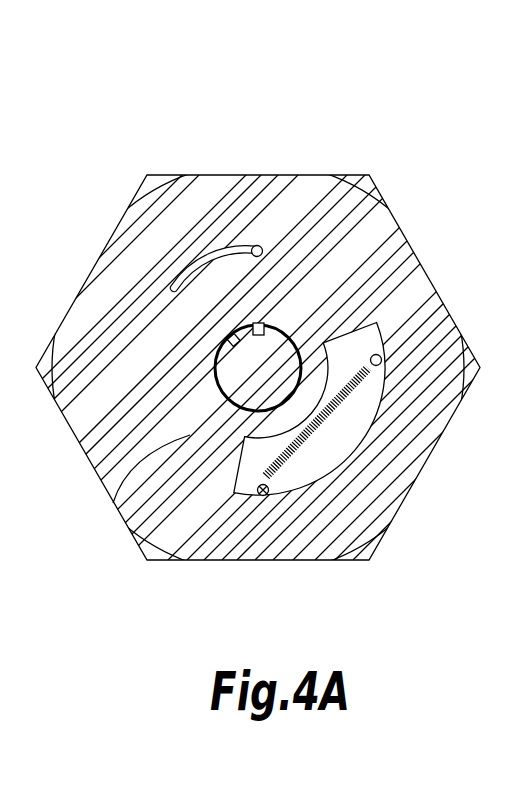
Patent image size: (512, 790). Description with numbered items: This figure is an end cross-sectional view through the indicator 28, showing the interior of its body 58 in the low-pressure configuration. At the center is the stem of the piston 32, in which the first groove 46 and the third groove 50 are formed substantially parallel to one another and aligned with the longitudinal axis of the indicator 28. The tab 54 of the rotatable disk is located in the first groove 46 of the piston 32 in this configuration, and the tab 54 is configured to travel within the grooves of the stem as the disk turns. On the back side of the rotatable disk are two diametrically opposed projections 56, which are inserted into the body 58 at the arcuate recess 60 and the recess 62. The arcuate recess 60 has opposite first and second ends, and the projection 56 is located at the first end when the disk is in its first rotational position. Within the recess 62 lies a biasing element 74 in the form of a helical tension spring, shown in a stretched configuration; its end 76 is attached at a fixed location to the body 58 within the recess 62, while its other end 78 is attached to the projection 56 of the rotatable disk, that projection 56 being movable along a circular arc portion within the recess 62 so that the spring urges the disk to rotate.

The indicator 28 is at (308, 140).
The piston 32 is at (113, 503).
The first groove 46 is at (256, 367).
The tab 54 is at (400, 263).
The third groove 50 is at (245, 390).
The projections 56 is at (254, 246).
The body 58 is at (117, 222).
The arcuate recess 60 is at (203, 252).
The recess 62 is at (362, 425).
The biasing element 74 is at (448, 377).
The end 76 is at (378, 355).
The end 78 is at (268, 489).